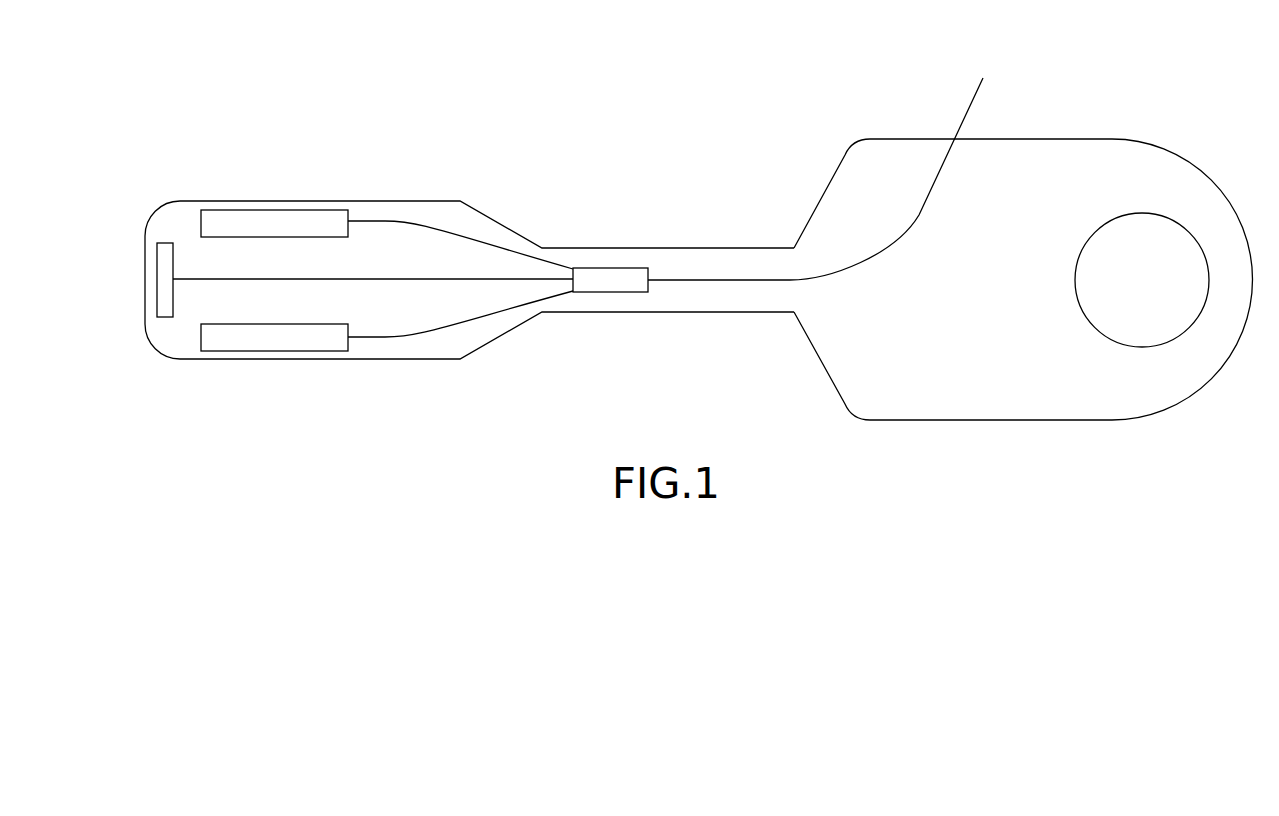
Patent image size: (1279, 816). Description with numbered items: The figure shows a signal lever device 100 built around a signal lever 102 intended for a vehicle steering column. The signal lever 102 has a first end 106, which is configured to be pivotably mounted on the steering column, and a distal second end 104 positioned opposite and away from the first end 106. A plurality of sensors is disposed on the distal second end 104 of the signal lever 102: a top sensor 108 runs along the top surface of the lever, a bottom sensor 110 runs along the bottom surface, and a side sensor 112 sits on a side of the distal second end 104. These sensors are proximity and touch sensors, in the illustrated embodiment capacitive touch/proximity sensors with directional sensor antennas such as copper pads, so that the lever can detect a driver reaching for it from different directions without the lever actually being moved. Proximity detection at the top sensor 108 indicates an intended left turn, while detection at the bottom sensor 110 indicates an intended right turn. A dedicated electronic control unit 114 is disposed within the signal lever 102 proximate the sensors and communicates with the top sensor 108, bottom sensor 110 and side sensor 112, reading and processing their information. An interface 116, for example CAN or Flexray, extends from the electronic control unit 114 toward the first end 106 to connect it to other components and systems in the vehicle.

The signal lever device 100 is at (772, 32).
The signal lever 102 is at (455, 359).
The distal second end 104 is at (146, 235).
The first end 106 is at (793, 243).
The top sensor 108 is at (225, 215).
The bottom sensor 110 is at (258, 341).
The side sensor 112 is at (162, 296).
The electronic control unit 114 is at (613, 292).
The interface 116 is at (972, 93).